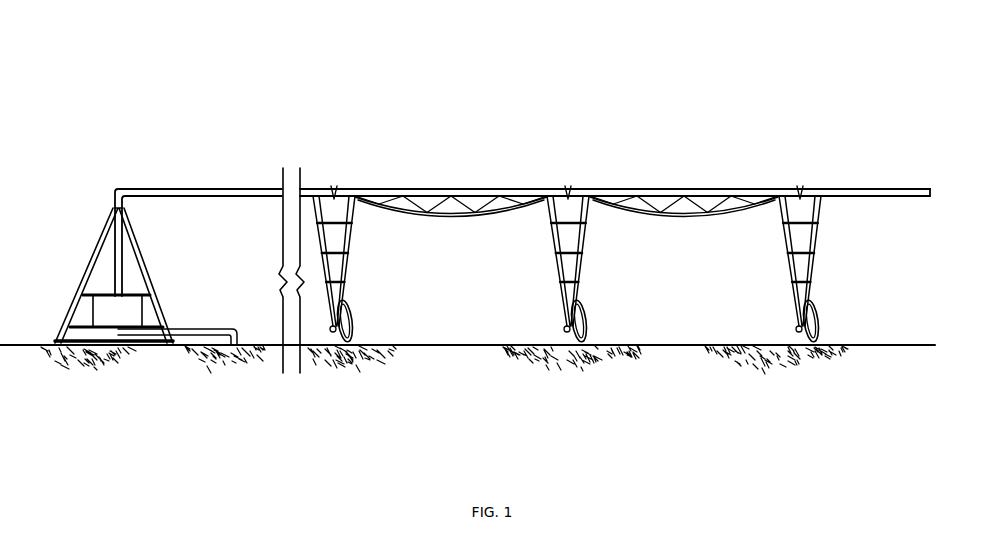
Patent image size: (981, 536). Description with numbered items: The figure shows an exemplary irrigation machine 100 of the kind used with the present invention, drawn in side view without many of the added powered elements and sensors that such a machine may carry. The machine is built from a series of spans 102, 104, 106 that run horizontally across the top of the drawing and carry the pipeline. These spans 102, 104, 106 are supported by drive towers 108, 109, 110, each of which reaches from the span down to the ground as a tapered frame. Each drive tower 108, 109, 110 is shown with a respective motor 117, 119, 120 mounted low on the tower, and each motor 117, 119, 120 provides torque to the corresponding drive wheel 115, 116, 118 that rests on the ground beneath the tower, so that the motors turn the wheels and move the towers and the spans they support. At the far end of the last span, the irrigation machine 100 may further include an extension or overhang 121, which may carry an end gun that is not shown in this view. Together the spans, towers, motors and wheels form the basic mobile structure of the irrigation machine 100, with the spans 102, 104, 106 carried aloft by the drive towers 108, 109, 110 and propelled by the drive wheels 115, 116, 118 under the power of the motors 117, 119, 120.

The irrigation machine 100 is at (523, 75).
The span 102 is at (160, 188).
The span 104 is at (430, 190).
The span 106 is at (672, 190).
The drive tower 108 is at (352, 247).
The drive tower 109 is at (587, 250).
The drive tower 110 is at (822, 258).
The drive wheel 115 is at (357, 323).
The drive wheel 116 is at (592, 323).
The drive wheel 118 is at (815, 325).
The motor 117 is at (350, 285).
The motor 119 is at (585, 285).
The motor 120 is at (815, 287).
The extension/overhang 121 is at (913, 188).